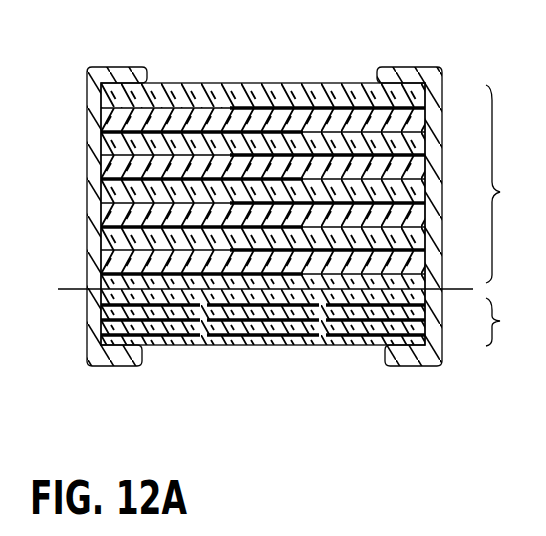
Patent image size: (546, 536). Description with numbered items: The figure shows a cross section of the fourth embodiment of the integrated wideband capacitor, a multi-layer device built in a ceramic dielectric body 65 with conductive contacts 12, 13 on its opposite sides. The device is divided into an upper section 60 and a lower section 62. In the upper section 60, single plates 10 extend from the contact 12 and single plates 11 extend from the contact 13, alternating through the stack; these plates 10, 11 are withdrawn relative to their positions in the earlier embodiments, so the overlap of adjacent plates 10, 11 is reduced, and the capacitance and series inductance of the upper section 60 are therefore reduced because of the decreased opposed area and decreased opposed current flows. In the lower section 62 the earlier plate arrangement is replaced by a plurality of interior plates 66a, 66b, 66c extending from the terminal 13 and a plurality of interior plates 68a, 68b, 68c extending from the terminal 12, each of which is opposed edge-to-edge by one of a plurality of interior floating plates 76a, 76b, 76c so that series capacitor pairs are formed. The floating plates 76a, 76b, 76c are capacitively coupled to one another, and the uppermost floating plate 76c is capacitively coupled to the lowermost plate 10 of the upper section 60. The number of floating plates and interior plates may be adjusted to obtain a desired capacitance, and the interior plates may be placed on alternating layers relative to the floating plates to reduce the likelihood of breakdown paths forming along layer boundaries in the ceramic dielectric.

The plate 10 is at (125, 132).
The plate 11 is at (322, 105).
The conductive contact 12 is at (88, 83).
The conductive contact 13 is at (442, 68).
The upper section 60 is at (511, 184).
The lower section 62 is at (510, 322).
The dielectric body 65 is at (233, 85).
The interior plate 66a is at (390, 337).
The interior plate 66b is at (378, 322).
The interior plate 66c is at (443, 300).
The interior plate 68a is at (153, 337).
The interior plate 68b is at (174, 322).
The interior plate 68c is at (101, 300).
The floating plate 76a is at (218, 337).
The floating plate 76b is at (252, 322).
The floating plate 76c is at (293, 307).